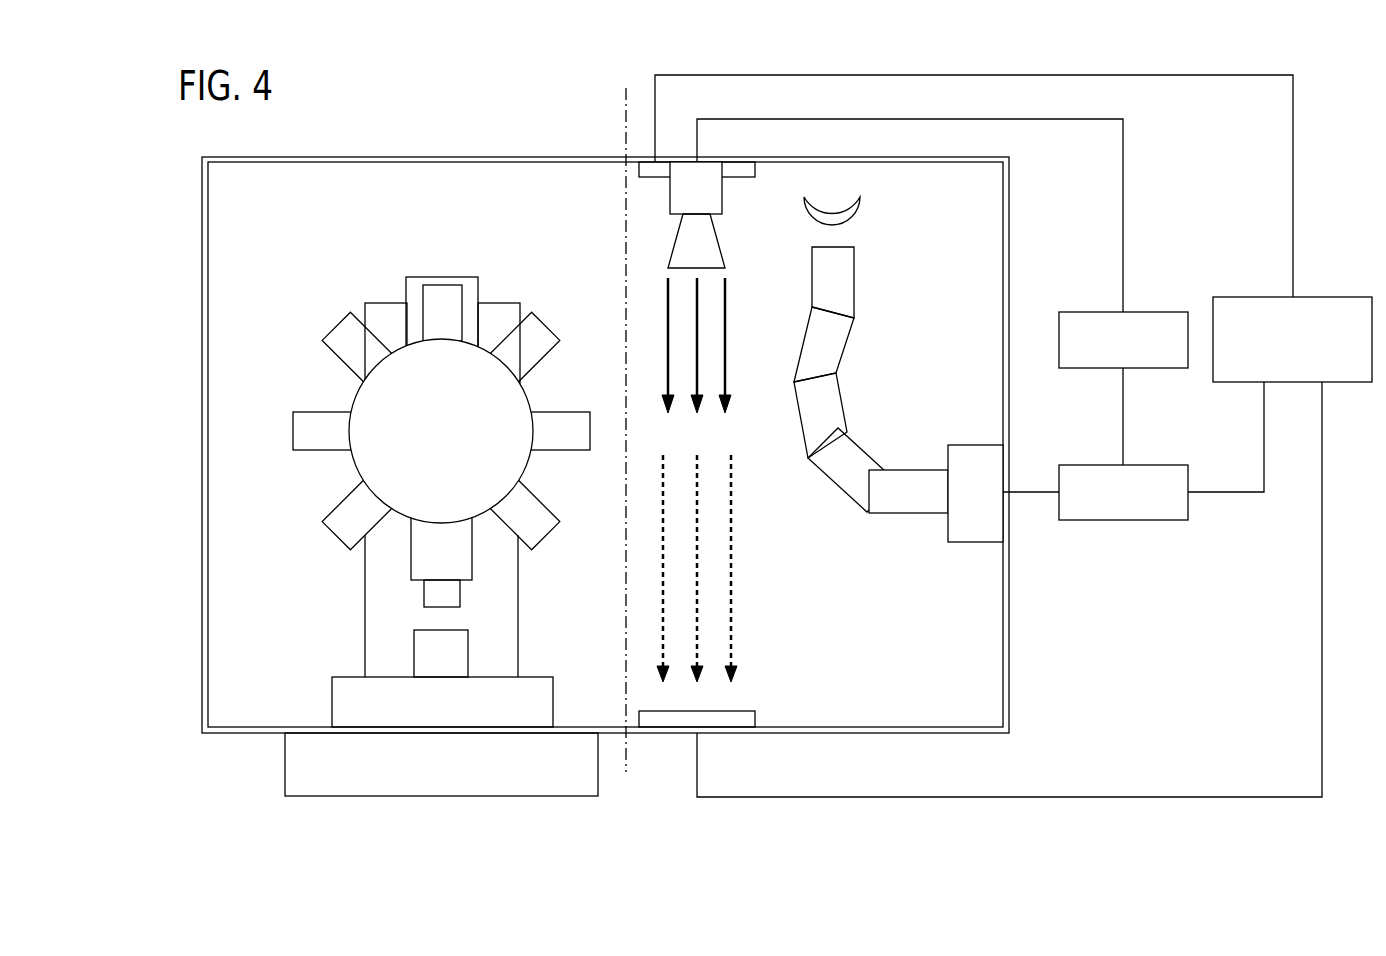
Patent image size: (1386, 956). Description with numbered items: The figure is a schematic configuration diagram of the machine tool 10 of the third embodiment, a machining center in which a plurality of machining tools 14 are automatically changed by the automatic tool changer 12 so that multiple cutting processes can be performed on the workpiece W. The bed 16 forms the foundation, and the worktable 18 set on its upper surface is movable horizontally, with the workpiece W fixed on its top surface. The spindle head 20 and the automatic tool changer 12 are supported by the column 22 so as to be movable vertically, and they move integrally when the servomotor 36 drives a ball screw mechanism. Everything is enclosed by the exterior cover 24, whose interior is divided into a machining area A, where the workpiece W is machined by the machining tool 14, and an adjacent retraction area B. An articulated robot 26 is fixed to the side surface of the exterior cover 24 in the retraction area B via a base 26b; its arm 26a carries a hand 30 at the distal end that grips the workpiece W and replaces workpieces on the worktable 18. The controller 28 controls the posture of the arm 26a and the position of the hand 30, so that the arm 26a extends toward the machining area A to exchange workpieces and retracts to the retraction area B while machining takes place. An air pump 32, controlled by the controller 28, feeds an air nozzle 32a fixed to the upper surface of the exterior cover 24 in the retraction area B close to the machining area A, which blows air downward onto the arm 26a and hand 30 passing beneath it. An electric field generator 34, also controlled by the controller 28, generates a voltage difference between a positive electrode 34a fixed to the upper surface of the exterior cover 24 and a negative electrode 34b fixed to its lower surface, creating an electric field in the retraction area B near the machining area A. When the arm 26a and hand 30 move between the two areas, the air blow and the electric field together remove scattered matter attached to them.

The machine tool 10 is at (360, 130).
The automatic tool changer 12 is at (370, 398).
The machining tool 14 is at (435, 595).
The bed 16 is at (305, 770).
The worktable 18 is at (350, 706).
The spindle head 20 is at (442, 550).
The column 22 is at (388, 318).
The exterior cover 24 is at (202, 312).
The articulated robot 26 is at (898, 407).
The arm 26a is at (902, 498).
The base 26b is at (978, 460).
The controller 28 is at (1123, 522).
The hand 30 is at (848, 226).
The air pump 32 is at (1090, 311).
The air nozzle 32a is at (712, 192).
The electric field generator 34 is at (1240, 297).
The positive electrode 34a is at (655, 170).
The negative electrode 34b is at (660, 727).
The servomotor 36 is at (441, 277).
The machining area A is at (222, 366).
The retraction area B is at (987, 306).
The workpiece W is at (425, 646).